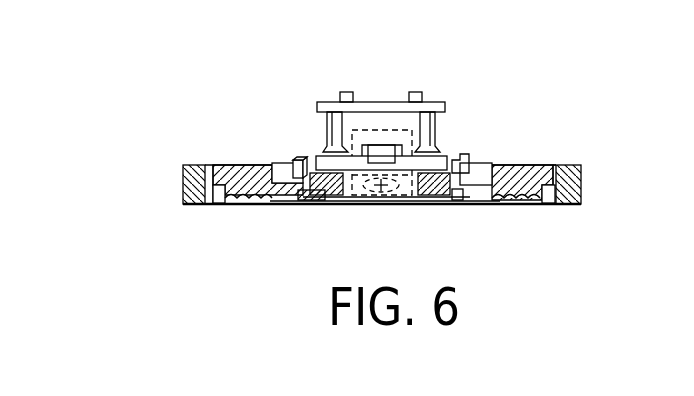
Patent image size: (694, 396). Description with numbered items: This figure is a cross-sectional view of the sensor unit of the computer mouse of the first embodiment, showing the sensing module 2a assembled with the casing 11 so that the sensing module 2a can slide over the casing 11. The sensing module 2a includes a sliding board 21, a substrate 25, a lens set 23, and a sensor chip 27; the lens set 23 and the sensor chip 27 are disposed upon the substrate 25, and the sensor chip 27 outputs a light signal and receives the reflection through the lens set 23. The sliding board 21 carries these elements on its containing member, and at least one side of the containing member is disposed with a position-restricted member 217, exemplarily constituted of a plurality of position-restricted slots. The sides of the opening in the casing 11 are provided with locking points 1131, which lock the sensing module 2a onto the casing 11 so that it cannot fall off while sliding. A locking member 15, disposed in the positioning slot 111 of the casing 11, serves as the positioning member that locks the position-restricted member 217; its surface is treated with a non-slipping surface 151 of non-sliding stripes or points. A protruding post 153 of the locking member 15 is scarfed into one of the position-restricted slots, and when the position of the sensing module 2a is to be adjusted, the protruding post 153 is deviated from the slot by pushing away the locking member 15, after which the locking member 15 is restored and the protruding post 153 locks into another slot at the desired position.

The casing 11 is at (578, 168).
The positioning slot 111 is at (555, 163).
The locking member 15 is at (515, 168).
The non-slipping surface 151 is at (520, 205).
The protruding post 153 is at (472, 196).
The locking point 1131 is at (300, 178).
The sliding board 21 is at (468, 142).
The substrate 25 is at (443, 155).
The position-restricted member 217 is at (323, 201).
The lens set 23 is at (388, 208).
The sensor chip 27 is at (382, 108).
The sensing module 2a is at (298, 122).